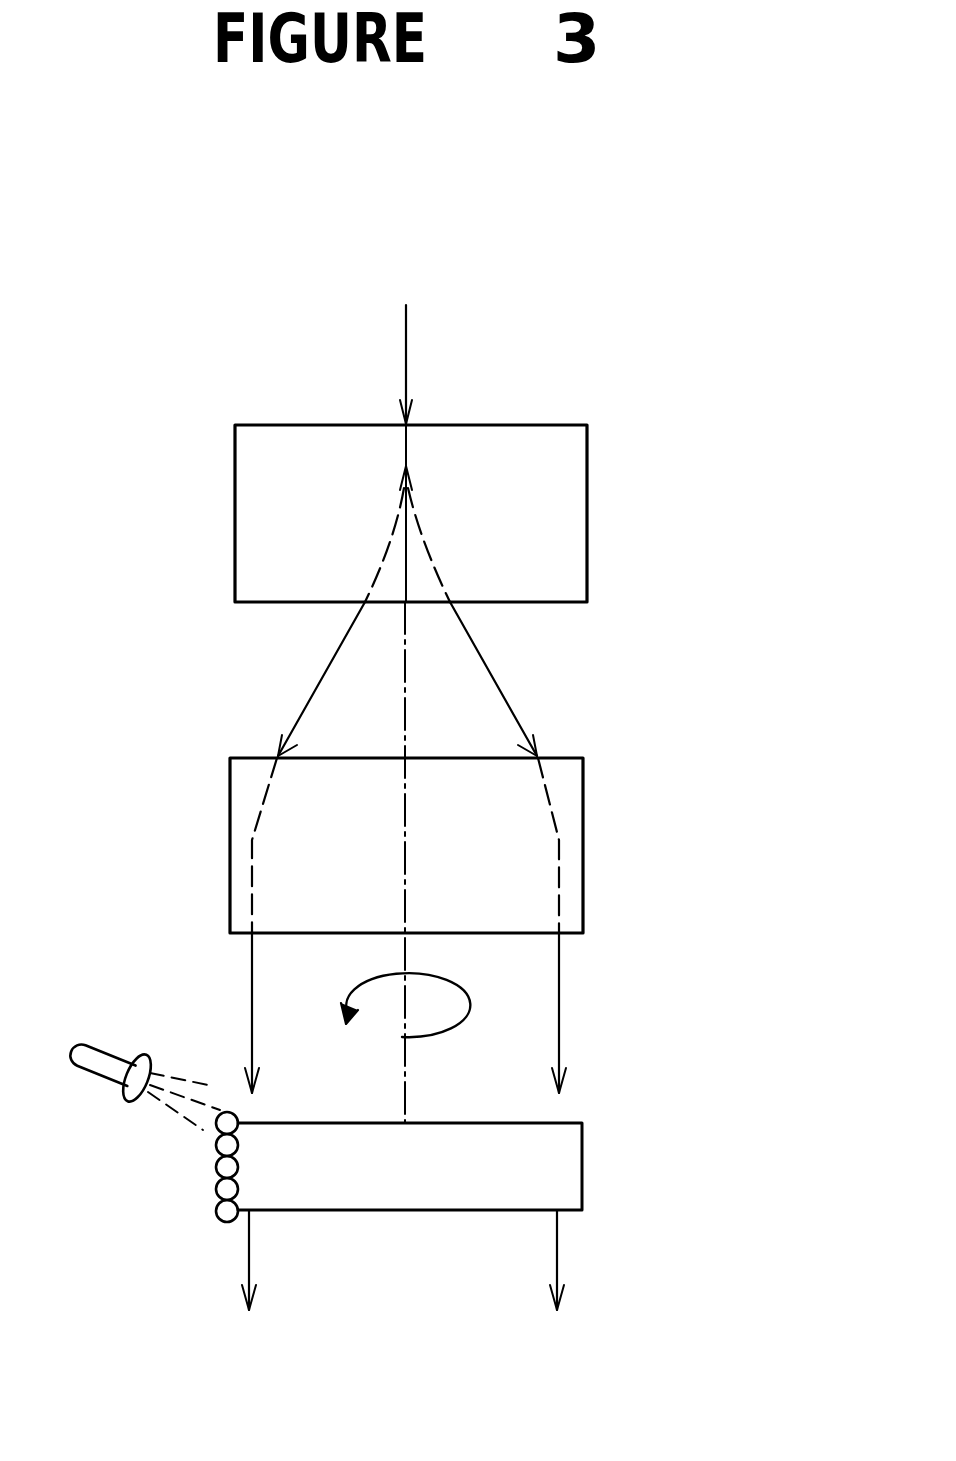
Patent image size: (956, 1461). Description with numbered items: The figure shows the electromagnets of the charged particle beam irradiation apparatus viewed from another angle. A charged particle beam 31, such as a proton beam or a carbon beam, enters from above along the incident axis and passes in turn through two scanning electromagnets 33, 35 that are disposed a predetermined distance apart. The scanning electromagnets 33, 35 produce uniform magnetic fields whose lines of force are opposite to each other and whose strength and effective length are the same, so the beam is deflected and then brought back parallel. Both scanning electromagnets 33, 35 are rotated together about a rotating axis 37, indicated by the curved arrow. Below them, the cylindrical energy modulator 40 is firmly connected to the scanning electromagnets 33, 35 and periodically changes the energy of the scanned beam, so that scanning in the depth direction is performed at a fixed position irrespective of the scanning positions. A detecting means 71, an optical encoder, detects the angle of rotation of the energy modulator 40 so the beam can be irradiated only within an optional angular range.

The charged particle beam 31 is at (406, 338).
The scanning electromagnet 33 is at (587, 500).
The scanning electromagnet 35 is at (583, 815).
The rotating axis 37 is at (425, 1008).
The energy modulator 40 is at (548, 1160).
The detecting means 71 is at (110, 1053).